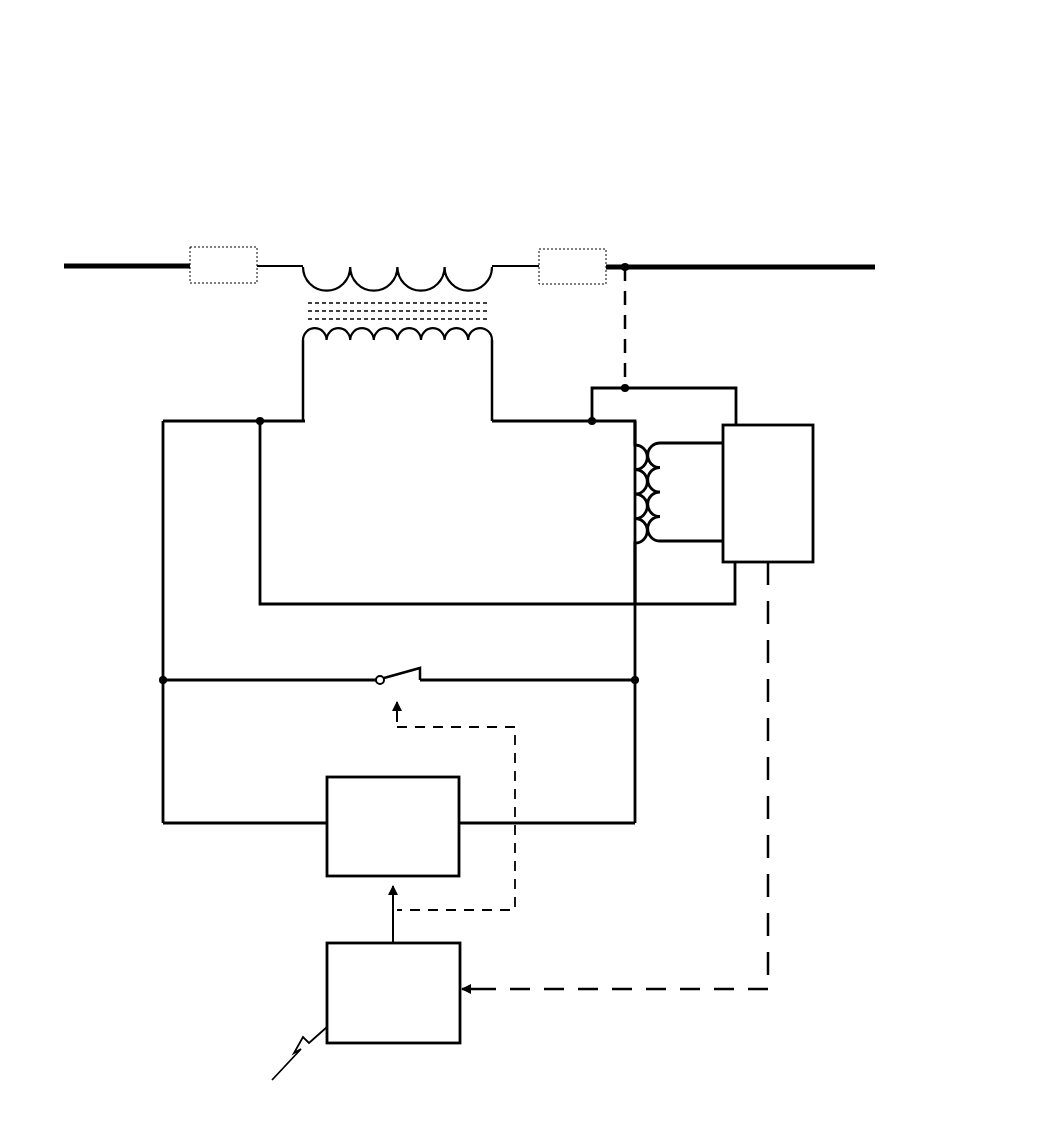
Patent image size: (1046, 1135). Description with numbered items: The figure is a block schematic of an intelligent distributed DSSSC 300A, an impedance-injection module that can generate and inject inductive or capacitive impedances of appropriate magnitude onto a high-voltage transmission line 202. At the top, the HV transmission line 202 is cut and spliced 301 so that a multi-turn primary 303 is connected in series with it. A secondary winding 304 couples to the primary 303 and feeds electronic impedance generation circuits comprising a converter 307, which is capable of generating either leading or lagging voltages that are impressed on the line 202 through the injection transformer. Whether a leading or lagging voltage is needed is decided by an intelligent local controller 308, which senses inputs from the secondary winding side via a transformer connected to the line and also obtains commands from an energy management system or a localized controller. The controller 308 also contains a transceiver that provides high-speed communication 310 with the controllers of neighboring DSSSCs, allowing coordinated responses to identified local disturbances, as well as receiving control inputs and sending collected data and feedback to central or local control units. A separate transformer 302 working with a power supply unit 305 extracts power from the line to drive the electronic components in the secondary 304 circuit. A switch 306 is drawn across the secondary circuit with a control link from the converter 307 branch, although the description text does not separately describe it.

The intelligent distributed DSSSC 300A is at (467, 117).
The high-voltage transmission line 202 is at (80, 266).
The cutting and splicing 301 is at (224, 247).
The transformer 302 is at (655, 430).
The multi-turn primary 303 is at (400, 265).
The secondary winding 304 is at (397, 340).
The power supply unit 305 is at (753, 563).
The switch 306 is at (408, 668).
The converter 307 is at (400, 775).
The intelligent local controller 308 is at (327, 990).
The high-speed communication 310 is at (300, 1053).